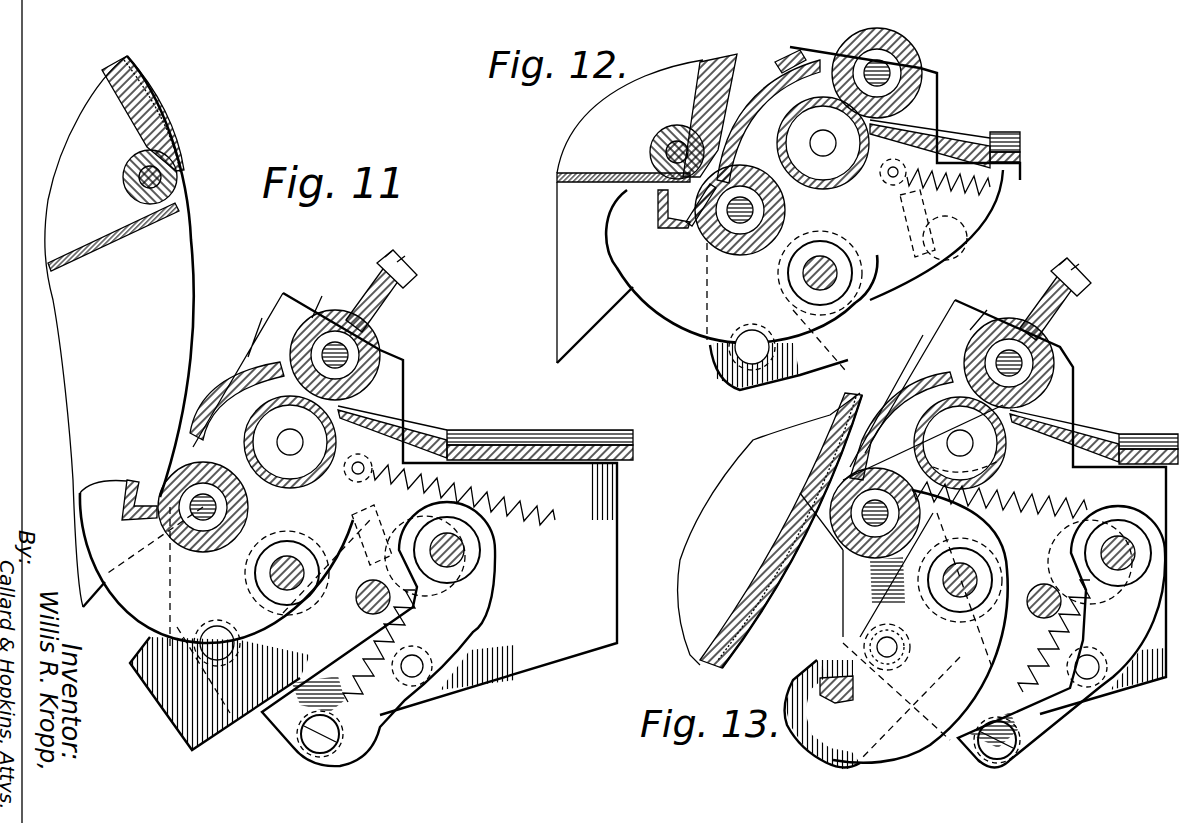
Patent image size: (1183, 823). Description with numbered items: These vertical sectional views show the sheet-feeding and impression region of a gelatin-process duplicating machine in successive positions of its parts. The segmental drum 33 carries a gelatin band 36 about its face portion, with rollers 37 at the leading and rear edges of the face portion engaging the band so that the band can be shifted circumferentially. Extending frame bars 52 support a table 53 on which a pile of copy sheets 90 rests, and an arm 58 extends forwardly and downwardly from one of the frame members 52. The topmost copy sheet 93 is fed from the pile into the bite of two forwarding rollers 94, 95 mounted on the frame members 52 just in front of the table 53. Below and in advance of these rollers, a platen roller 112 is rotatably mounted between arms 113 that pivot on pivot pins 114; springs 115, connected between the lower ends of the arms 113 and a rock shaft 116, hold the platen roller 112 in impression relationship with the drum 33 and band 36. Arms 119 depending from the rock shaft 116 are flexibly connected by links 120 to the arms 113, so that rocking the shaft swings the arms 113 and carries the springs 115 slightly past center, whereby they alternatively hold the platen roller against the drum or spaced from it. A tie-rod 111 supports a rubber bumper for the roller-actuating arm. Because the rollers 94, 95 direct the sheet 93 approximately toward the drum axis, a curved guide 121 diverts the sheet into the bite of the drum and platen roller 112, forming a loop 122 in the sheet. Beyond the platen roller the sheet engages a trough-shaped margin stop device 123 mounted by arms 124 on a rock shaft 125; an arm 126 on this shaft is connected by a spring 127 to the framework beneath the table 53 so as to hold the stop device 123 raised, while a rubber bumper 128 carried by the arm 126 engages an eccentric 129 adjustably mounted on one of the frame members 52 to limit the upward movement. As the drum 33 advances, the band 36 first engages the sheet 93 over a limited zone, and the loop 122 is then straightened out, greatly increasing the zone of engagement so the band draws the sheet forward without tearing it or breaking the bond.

In FIG. 11, the drum 33 is at (110, 87).
In FIG. 12, the drum 33 is at (708, 72).
In FIG. 13, the drum 33 is at (813, 478).
In FIG. 11, the gelatin band 36 is at (124, 224).
In FIG. 12, the gelatin band 36 is at (572, 178).
In FIG. 13, the gelatin band 36 is at (770, 590).
In FIG. 11, the rollers 37 is at (123, 178).
In FIG. 12, the rollers 37 is at (655, 143).
In FIG. 11, the frame bars 52 is at (570, 645).
In FIG. 12, the frame bars 52 is at (1000, 176).
In FIG. 13, the frame bars 52 is at (1120, 700).
In FIG. 11, the table 53 is at (537, 462).
In FIG. 12, the table 53 is at (940, 127).
In FIG. 13, the table 53 is at (1153, 462).
In FIG. 11, the arm 58 is at (215, 730).
In FIG. 12, the arm 58 is at (735, 375).
In FIG. 13, the arm 58 is at (820, 667).
In FIG. 11, the pile of sheets 90 is at (537, 417).
In FIG. 12, the pile of sheets 90 is at (1007, 132).
In FIG. 13, the pile of sheets 90 is at (1153, 423).
In FIG. 11, the copy sheet 93 is at (383, 413).
In FIG. 12, the copy sheet 93 is at (658, 190).
In FIG. 13, the copy sheet 93 is at (910, 428).
In FIG. 11, the forwarding roller 94 is at (380, 368).
In FIG. 12, the forwarding roller 94 is at (920, 64).
In FIG. 13, the forwarding roller 94 is at (1052, 345).
In FIG. 11, the forwarding roller 95 is at (262, 410).
In FIG. 12, the forwarding roller 95 is at (833, 188).
In FIG. 13, the forwarding roller 95 is at (1007, 445).
In FIG. 11, the tie-rod 111 is at (357, 600).
In FIG. 13, the tie-rod 111 is at (1048, 588).
In FIG. 11, the platen roller 112 is at (176, 542).
In FIG. 12, the platen roller 112 is at (755, 245).
In FIG. 13, the platen roller 112 is at (852, 540).
In FIG. 11, the arms 113 is at (172, 588).
In FIG. 12, the arms 113 is at (710, 350).
In FIG. 13, the arms 113 is at (850, 582).
In FIG. 11, the pivot pins 114 is at (223, 655).
In FIG. 12, the pivot pins 114 is at (745, 352).
In FIG. 13, the pivot pins 114 is at (887, 662).
In FIG. 11, the springs 115 is at (372, 634).
In FIG. 13, the springs 115 is at (1062, 632).
In FIG. 11, the rock shaft 116 is at (465, 556).
In FIG. 13, the rock shaft 116 is at (1118, 572).
In FIG. 11, the arms 119 is at (480, 577).
In FIG. 13, the arms 119 is at (1117, 652).
In FIG. 11, the links 120 is at (393, 703).
In FIG. 13, the links 120 is at (1067, 712).
In FIG. 11, the curved guide 121 is at (262, 330).
In FIG. 12, the curved guide 121 is at (750, 83).
In FIG. 13, the curved guide 121 is at (917, 371).
In FIG. 12, the loop 122 is at (778, 76).
In FIG. 11, the margin stop device 123 is at (124, 493).
In FIG. 12, the margin stop device 123 is at (655, 210).
In FIG. 13, the margin stop device 123 is at (837, 703).
In FIG. 11, the arms 124 is at (143, 600).
In FIG. 12, the arms 124 is at (633, 270).
In FIG. 13, the arms 124 is at (912, 752).
In FIG. 11, the rock shaft 125 is at (270, 566).
In FIG. 12, the rock shaft 125 is at (855, 280).
In FIG. 13, the rock shaft 125 is at (973, 575).
In FIG. 11, the arm 126 is at (352, 512).
In FIG. 12, the arm 126 is at (955, 205).
In FIG. 13, the arm 126 is at (885, 630).
In FIG. 11, the spring 127 is at (533, 528).
In FIG. 12, the spring 127 is at (992, 192).
In FIG. 13, the spring 127 is at (1060, 500).
In FIG. 11, the bumper 128 is at (362, 483).
In FIG. 12, the bumper 128 is at (940, 230).
In FIG. 13, the bumper 128 is at (1000, 463).
In FIG. 11, the eccentric 129 is at (415, 588).
In FIG. 12, the eccentric 129 is at (935, 250).
In FIG. 13, the eccentric 129 is at (1062, 538).